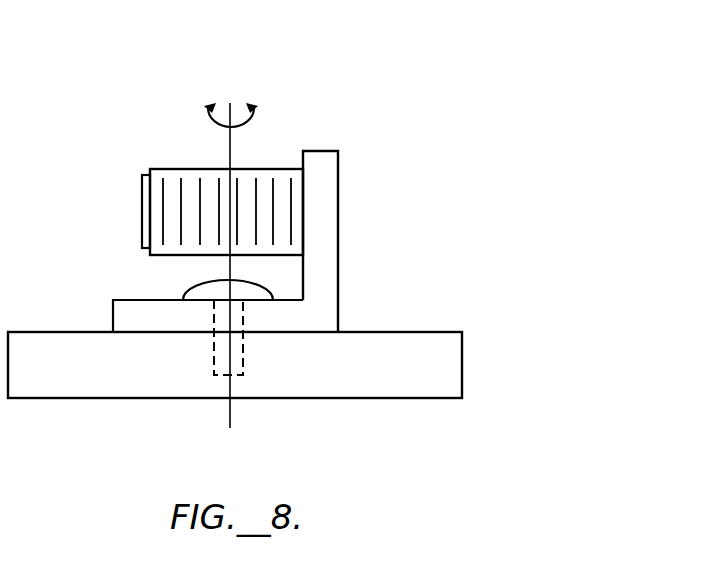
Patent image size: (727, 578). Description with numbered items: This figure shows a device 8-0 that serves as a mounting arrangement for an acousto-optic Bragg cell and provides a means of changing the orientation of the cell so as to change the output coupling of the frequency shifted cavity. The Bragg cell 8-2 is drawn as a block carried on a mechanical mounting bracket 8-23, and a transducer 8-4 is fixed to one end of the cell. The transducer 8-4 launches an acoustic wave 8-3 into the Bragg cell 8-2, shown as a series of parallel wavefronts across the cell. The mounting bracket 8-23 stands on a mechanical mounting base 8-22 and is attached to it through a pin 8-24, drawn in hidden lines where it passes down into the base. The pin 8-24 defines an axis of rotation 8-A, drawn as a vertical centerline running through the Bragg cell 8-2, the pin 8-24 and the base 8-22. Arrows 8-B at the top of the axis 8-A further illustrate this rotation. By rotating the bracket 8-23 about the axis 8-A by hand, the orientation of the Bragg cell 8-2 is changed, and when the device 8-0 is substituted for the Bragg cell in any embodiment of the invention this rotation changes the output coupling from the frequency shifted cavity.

The device for changing the orientation of the Bragg cell 8-0 is at (509, 95).
The Bragg cell 8-2 is at (165, 168).
The acoustic wave 8-3 is at (253, 178).
The transducer 8-4 is at (142, 225).
The axis of rotation 8-A is at (229, 413).
The arrows illustrating rotation 8-B is at (255, 121).
The mechanical mounting base 8-22 is at (462, 360).
The mechanical mounting bracket 8-23 is at (338, 192).
The pin 8-24 is at (243, 355).